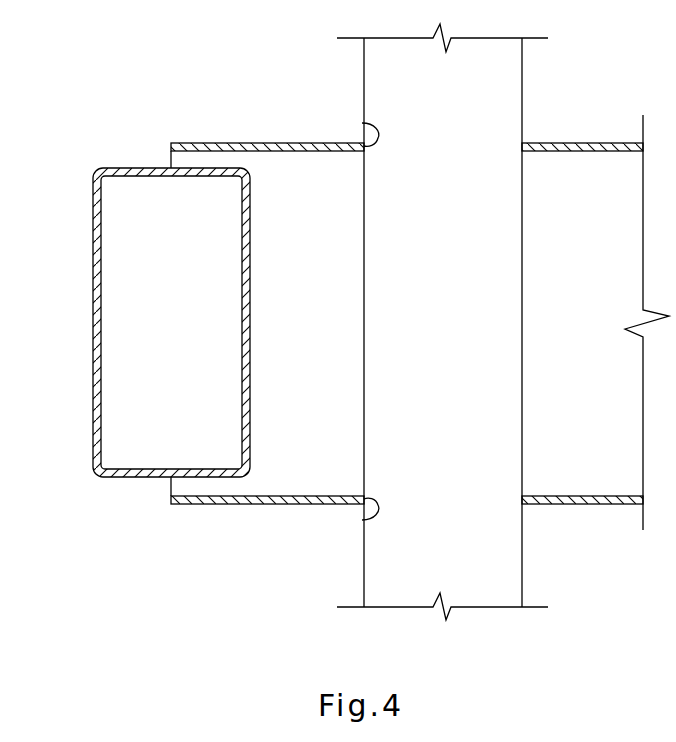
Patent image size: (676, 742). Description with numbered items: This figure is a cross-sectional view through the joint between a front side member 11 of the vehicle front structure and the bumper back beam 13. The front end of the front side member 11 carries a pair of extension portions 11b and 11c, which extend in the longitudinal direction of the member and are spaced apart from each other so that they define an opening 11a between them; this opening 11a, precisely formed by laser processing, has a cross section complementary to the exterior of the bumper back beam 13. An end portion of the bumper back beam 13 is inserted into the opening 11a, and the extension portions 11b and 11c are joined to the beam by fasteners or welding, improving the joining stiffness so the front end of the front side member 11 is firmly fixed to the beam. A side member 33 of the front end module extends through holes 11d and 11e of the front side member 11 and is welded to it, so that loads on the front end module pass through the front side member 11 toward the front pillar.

The front side member 11 is at (275, 313).
The opening 11a is at (243, 398).
The extension portion 11b is at (214, 143).
The extension portion 11c is at (215, 505).
The hole 11d is at (362, 123).
The hole 11e is at (362, 520).
The bumper back beam 13 is at (93, 320).
The side member 33 is at (503, 91).